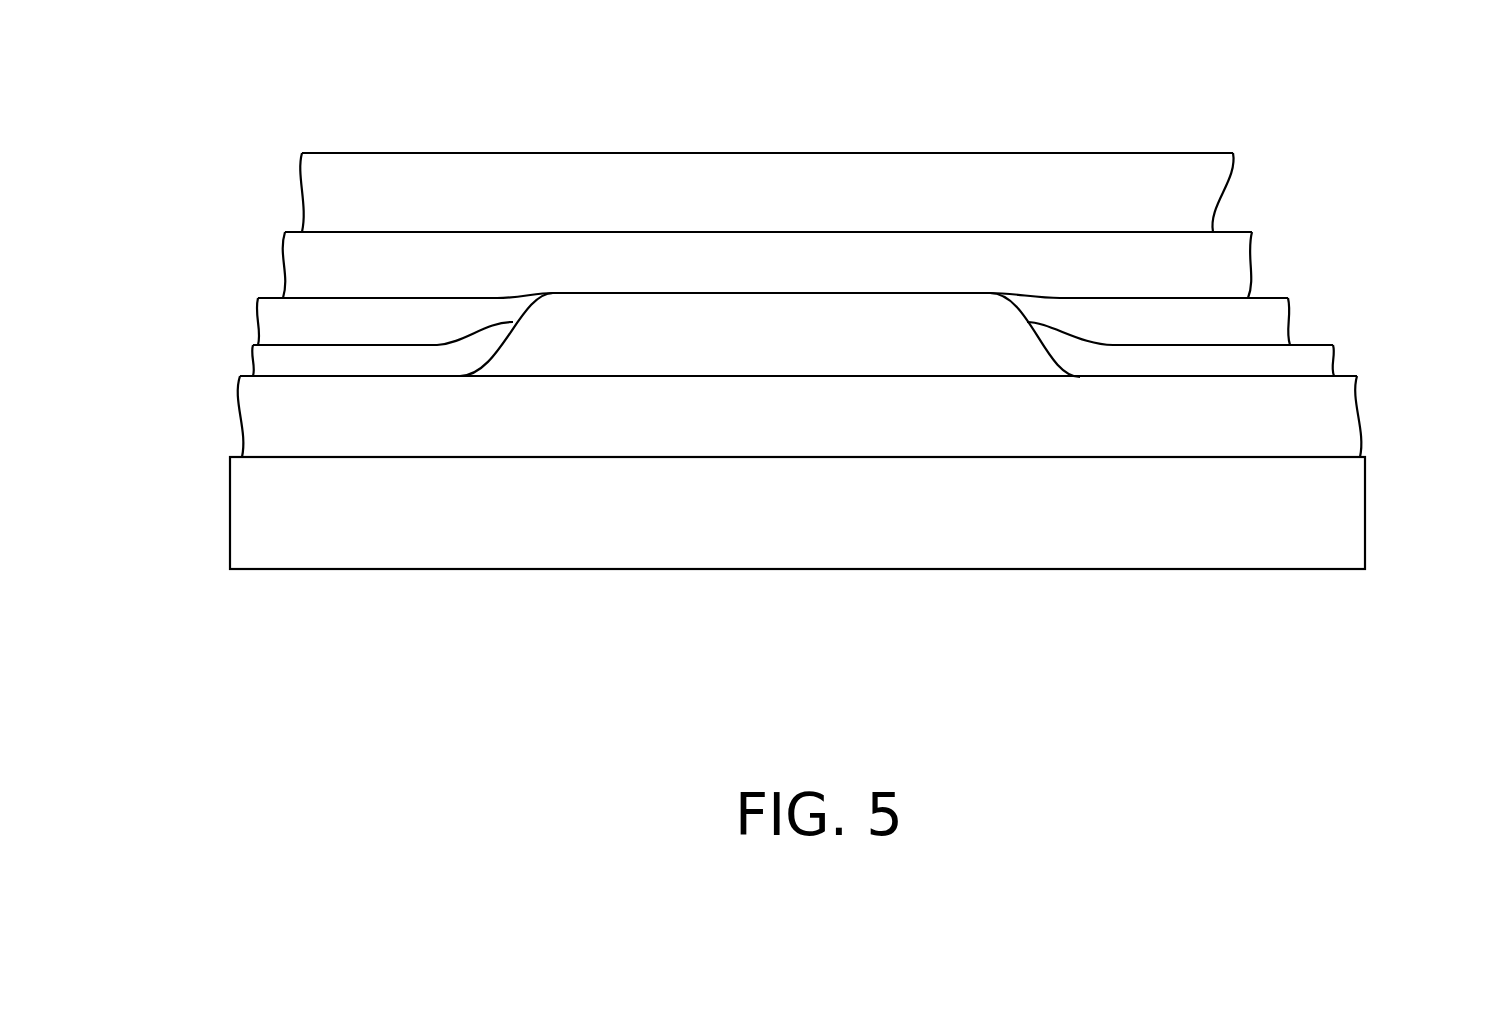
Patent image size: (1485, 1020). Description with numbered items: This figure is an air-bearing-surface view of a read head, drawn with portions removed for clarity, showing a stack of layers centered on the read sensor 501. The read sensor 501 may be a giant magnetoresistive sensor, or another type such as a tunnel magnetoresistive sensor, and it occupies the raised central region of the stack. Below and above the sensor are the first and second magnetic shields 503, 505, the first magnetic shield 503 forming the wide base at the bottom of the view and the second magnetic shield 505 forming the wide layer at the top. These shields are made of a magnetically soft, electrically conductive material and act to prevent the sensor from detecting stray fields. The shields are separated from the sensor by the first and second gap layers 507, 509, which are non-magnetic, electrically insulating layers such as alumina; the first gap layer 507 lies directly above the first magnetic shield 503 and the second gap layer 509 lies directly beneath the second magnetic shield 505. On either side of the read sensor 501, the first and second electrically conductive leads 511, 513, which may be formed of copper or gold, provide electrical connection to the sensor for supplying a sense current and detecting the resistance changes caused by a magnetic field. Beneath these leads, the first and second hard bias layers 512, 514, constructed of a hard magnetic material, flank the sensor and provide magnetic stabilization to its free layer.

The read sensor 501 is at (757, 337).
The first magnetic shield 503 is at (1152, 528).
The second magnetic shield 505 is at (955, 185).
The first gap layer 507 is at (1333, 412).
The second gap layer 509 is at (1213, 265).
The first electrically conductive lead 511 is at (1267, 320).
The first hard bias layer 512 is at (1308, 360).
The second electrically conductive lead 513 is at (293, 320).
The second hard bias layer 514 is at (270, 358).